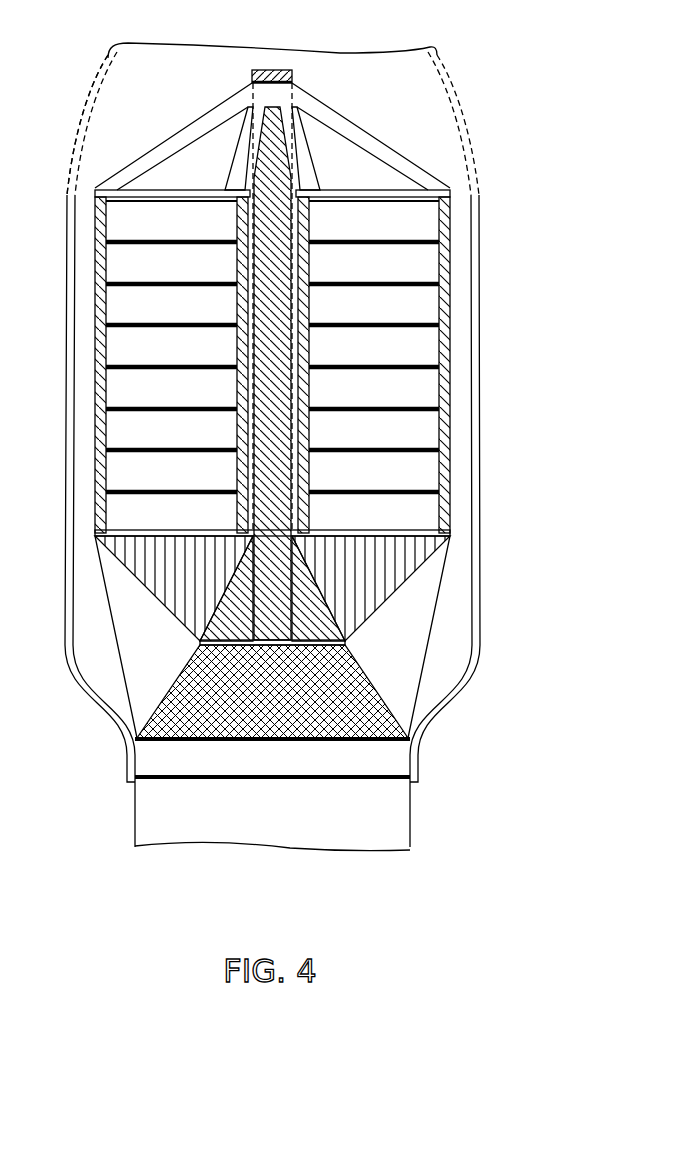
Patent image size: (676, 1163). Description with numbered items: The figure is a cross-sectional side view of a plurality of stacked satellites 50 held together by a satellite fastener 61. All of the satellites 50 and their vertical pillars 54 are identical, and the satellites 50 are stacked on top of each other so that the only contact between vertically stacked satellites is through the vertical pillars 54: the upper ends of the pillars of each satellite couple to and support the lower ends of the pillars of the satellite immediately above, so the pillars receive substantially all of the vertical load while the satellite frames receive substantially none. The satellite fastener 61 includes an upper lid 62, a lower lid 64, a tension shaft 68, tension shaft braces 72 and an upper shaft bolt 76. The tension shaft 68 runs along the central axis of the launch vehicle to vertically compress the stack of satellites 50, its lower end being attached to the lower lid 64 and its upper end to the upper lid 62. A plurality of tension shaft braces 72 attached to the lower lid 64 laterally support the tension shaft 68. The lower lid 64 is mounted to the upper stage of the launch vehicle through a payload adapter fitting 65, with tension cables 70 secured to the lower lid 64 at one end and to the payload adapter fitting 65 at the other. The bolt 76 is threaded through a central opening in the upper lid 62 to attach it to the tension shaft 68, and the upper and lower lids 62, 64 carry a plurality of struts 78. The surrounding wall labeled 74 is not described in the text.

The satellite 50 is at (384, 522).
The vertical pillar 54 is at (236, 214).
The satellite fastener 61 is at (350, 99).
The upper lid 62 is at (240, 93).
The lower lid 64 is at (166, 569).
The payload adapter fitting 65 is at (338, 701).
The tension shaft 68 is at (275, 202).
The tension cable 70 is at (121, 673).
The tension shaft brace 72 is at (323, 591).
The casing wall 74 is at (483, 306).
The upper shaft bolt 76 is at (272, 70).
The strut 78 is at (136, 160).